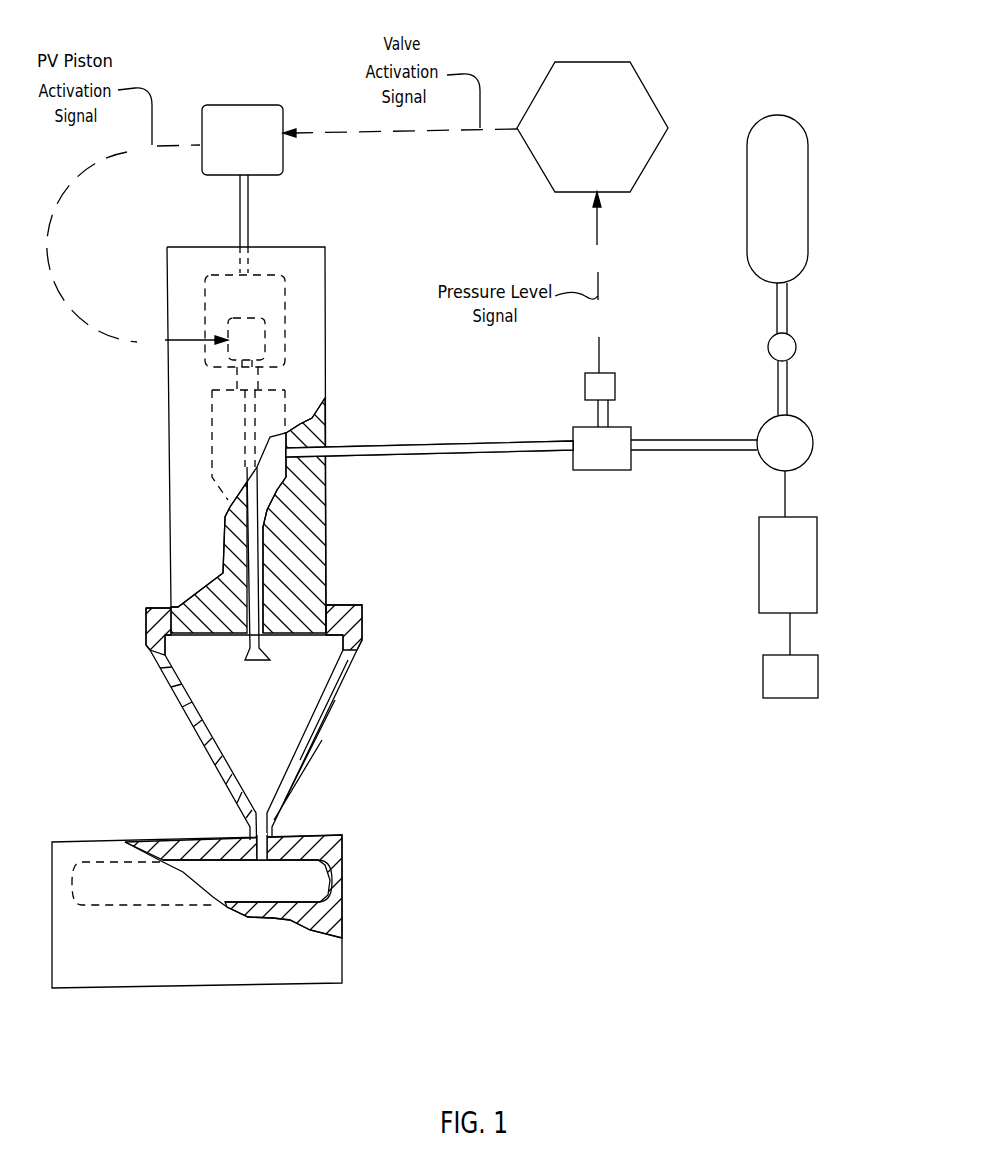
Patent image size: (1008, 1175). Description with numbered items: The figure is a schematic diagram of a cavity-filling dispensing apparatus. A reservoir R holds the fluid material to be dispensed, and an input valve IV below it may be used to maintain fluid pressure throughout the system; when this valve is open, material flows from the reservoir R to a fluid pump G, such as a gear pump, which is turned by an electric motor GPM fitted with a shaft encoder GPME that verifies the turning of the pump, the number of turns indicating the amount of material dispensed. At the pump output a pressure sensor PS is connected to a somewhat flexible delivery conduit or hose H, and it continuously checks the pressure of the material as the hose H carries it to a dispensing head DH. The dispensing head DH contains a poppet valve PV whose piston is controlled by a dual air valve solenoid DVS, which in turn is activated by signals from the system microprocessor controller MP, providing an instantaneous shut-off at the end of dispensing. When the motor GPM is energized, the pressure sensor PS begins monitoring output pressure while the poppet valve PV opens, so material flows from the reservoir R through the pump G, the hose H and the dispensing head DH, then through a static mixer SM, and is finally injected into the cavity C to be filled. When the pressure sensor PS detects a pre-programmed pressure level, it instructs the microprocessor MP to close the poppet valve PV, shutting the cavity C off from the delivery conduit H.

The microprocessor controller MP is at (614, 62).
The dual air valve solenoid DVS is at (222, 105).
The reservoir R is at (808, 196).
The input valve IV is at (796, 345).
The fluid pump G is at (813, 443).
The electric motor GPM is at (817, 563).
The shaft encoder GPME is at (818, 673).
The pressure sensor PS is at (615, 385).
The delivery hose H is at (431, 447).
The dispensing head DH is at (170, 457).
The poppet valve PV is at (250, 655).
The static mixer SM is at (200, 738).
The cavity C is at (217, 878).